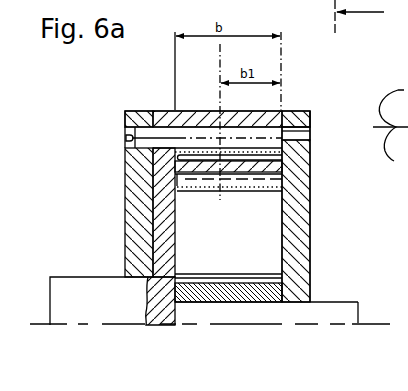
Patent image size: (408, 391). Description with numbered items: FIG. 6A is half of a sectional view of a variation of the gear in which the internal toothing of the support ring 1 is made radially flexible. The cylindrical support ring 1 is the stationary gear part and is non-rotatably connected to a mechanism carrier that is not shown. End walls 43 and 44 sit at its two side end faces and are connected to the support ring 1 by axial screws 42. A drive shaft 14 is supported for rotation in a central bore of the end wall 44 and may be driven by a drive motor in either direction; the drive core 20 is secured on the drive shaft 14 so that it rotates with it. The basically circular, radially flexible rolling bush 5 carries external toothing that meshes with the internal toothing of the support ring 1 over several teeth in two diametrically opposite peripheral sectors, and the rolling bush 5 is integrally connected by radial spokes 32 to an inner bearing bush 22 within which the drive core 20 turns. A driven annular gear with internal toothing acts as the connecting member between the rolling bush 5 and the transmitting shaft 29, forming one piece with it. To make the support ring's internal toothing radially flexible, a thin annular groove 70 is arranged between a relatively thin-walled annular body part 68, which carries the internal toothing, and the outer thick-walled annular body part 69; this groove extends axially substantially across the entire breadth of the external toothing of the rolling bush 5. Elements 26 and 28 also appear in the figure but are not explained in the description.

The support ring 1 is at (152, 110).
The axial screws 42 is at (126, 133).
The end wall 43 is at (138, 229).
The end wall 44 is at (300, 235).
The outer thick-walled annular body part 69 is at (272, 110).
The annular groove 70 is at (270, 158).
The thin-walled annular body part 68 is at (283, 149).
The rolling bush 5 is at (282, 190).
The spokes 32 is at (262, 252).
The transmitting shaft 29 is at (82, 288).
The inner wall 26 is at (148, 288).
The inner bearing bush 22 is at (202, 306).
The drive core 20 is at (250, 305).
The drive shaft 14 is at (335, 313).
The adjacent component 28 is at (390, 110).